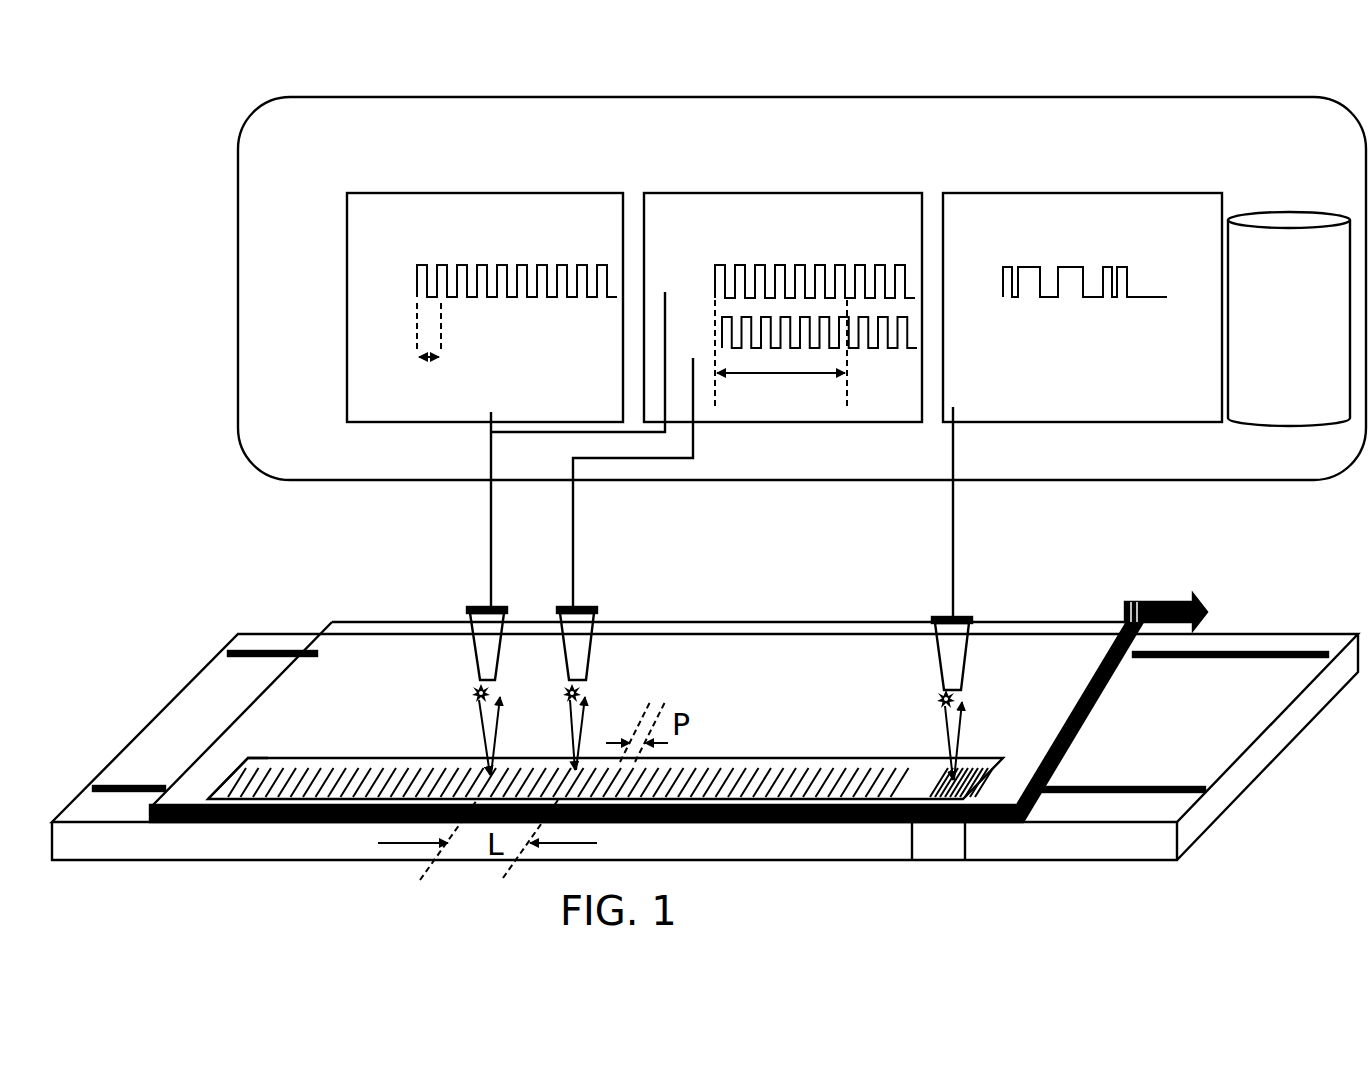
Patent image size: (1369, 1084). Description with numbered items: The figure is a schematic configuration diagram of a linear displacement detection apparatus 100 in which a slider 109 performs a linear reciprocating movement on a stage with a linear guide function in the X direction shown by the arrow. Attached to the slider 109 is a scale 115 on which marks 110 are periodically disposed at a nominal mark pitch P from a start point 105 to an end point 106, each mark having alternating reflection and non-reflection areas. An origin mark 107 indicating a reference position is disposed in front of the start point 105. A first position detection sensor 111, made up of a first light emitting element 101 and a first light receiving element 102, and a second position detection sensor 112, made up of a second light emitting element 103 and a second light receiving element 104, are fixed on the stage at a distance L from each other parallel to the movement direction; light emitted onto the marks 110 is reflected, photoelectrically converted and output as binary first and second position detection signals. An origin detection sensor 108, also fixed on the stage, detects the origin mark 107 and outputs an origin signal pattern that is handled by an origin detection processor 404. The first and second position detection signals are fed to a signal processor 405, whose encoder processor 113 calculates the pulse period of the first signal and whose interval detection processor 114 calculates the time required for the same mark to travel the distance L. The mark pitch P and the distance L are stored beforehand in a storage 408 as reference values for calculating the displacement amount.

The linear displacement detection apparatus 100 is at (178, 137).
The first light emitting element 101 is at (449, 729).
The first light receiving element 102 is at (487, 650).
The second light emitting element 103 is at (583, 683).
The second light receiving element 104 is at (582, 641).
The start point 105 is at (921, 767).
The end point 106 is at (255, 768).
The origin mark 107 is at (965, 862).
The origin detection sensor 108 is at (930, 620).
The slider 109 is at (352, 637).
The marks 110 is at (578, 697).
The first position detection sensor 111 is at (417, 691).
The second position detection sensor 112 is at (667, 688).
The encoder processor 113 is at (485, 292).
The interval detection processor 114 is at (783, 292).
The scale 115 is at (237, 777).
The origin detection processor 404 is at (1082, 292).
The signal processor 405 is at (747, 183).
The storage 408 is at (1289, 294).